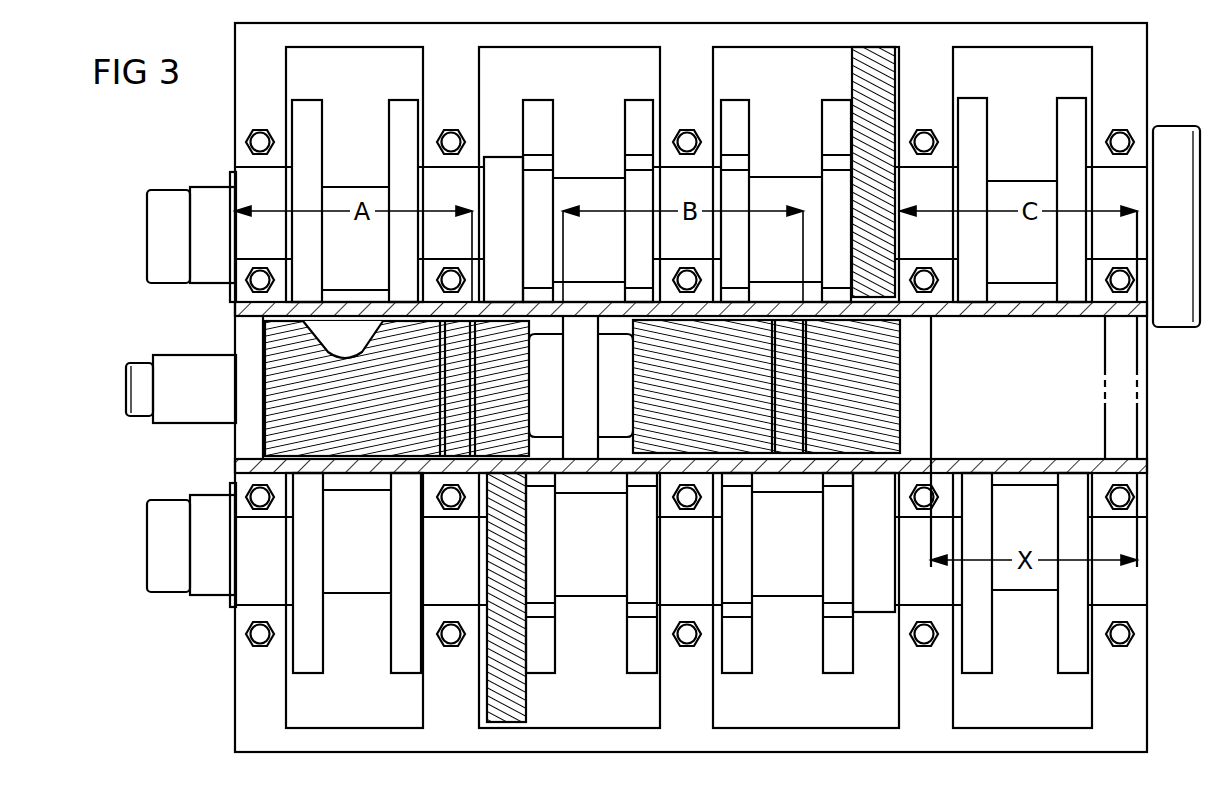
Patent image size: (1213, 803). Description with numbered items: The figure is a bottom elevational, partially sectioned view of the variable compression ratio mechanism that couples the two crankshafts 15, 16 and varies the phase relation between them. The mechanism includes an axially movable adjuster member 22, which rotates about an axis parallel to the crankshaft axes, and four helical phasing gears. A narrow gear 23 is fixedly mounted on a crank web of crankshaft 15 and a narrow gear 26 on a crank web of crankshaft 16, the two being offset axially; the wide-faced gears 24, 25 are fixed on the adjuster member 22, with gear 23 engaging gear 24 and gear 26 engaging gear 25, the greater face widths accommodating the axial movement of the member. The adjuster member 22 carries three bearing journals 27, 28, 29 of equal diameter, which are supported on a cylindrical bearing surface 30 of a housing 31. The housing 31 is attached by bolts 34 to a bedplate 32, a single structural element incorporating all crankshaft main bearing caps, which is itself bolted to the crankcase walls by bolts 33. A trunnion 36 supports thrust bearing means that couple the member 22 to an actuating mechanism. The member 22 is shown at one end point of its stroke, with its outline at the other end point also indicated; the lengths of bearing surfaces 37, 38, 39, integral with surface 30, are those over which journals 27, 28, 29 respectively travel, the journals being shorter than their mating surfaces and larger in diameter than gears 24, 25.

The crankshaft 15 is at (352, 572).
The crankshaft 16 is at (368, 190).
The axially movable adjuster member 22 is at (553, 350).
The helical phasing gear 23 is at (508, 700).
The helical phasing gear 24 is at (280, 352).
The helical phasing gear 25 is at (880, 352).
The helical phasing gear 26 is at (855, 65).
The bearing journal 27 is at (247, 435).
The bearing journal 28 is at (583, 433).
The bearing journal 29 is at (917, 418).
The cylindrical bearing surface 30 is at (1068, 397).
The housing 31 is at (1028, 462).
The bedplate 32 is at (1127, 694).
The bolt 33 is at (254, 144).
The bolt 34 is at (254, 284).
The trunnion 36 is at (182, 412).
The bearing surface 37 is at (347, 343).
The bearing surface 38 is at (613, 325).
The bearing surface 39 is at (1077, 328).